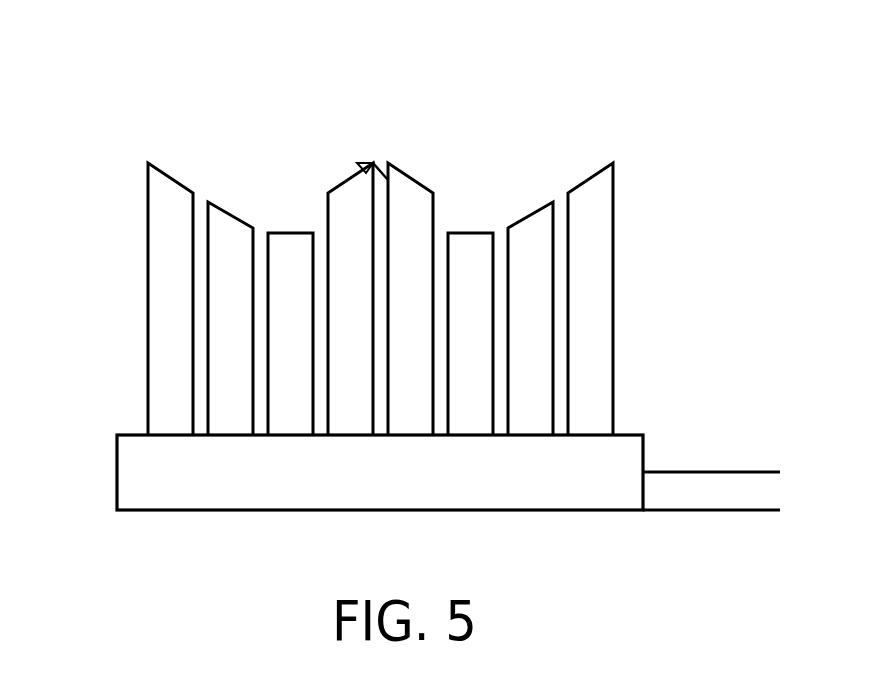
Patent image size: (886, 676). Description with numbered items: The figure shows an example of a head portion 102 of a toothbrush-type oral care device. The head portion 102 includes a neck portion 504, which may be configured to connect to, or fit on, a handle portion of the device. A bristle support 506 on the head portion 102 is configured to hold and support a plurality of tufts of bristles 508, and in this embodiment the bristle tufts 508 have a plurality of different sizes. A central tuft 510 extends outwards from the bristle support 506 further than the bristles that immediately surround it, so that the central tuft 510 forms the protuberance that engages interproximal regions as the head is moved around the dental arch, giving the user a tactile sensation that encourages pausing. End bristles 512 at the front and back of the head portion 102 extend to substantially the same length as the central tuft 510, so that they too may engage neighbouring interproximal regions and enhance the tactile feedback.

The head portion 102 is at (146, 88).
The neck portion 504 is at (713, 511).
The bristle support 506 is at (117, 472).
The tufts of bristles 508 is at (613, 158).
The central tuft 510 is at (390, 165).
The end bristles 512 is at (148, 227).